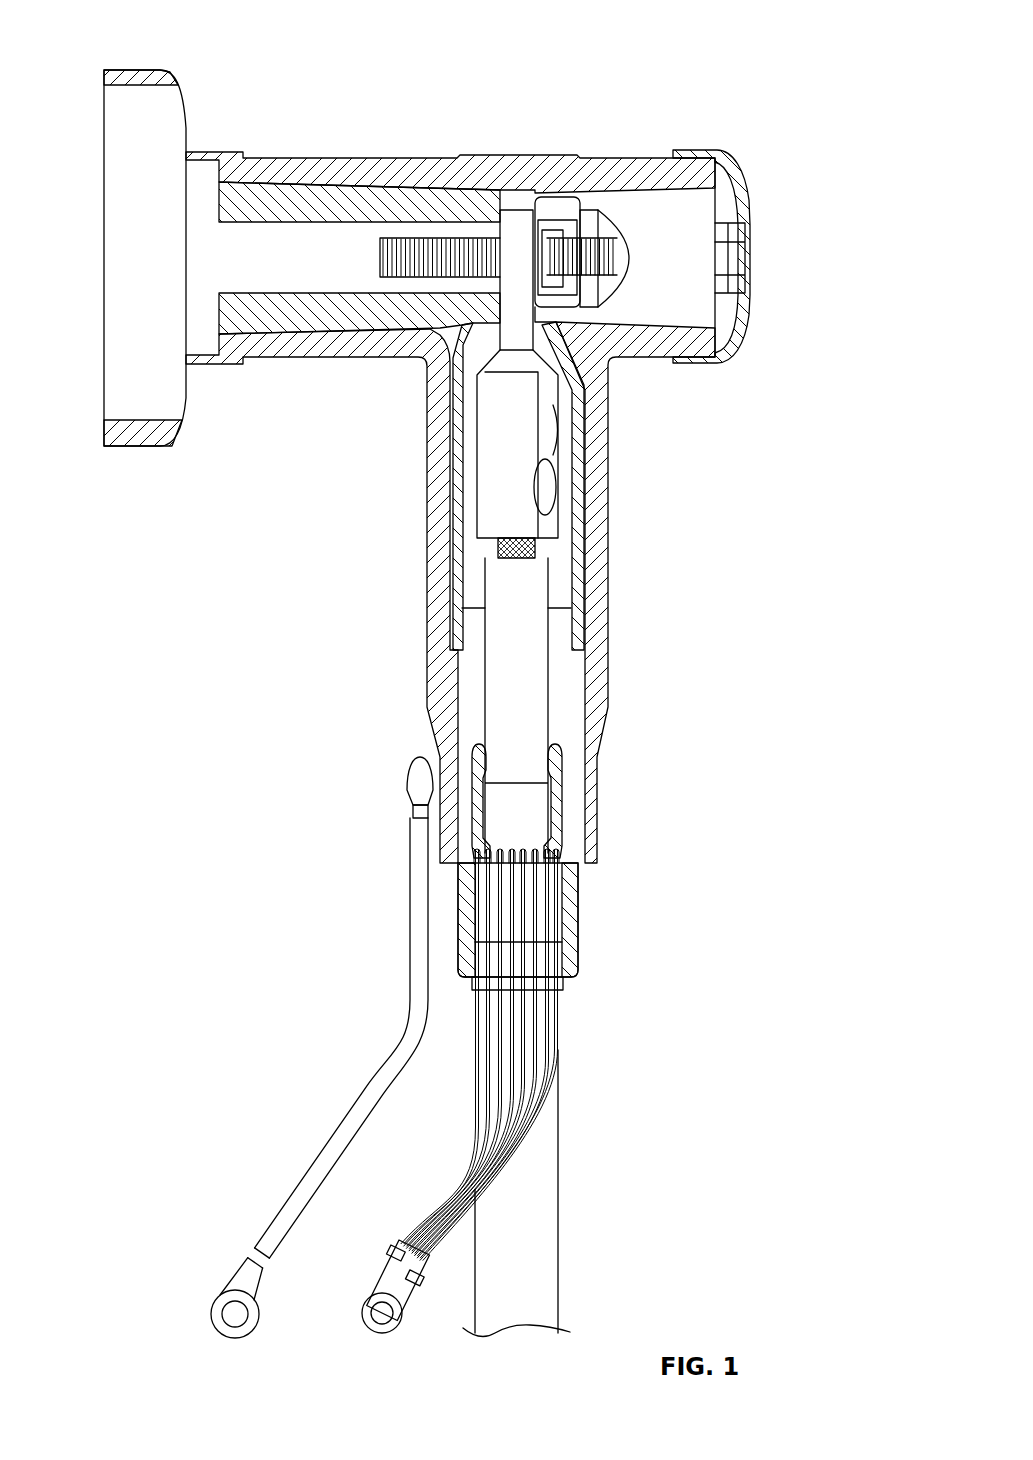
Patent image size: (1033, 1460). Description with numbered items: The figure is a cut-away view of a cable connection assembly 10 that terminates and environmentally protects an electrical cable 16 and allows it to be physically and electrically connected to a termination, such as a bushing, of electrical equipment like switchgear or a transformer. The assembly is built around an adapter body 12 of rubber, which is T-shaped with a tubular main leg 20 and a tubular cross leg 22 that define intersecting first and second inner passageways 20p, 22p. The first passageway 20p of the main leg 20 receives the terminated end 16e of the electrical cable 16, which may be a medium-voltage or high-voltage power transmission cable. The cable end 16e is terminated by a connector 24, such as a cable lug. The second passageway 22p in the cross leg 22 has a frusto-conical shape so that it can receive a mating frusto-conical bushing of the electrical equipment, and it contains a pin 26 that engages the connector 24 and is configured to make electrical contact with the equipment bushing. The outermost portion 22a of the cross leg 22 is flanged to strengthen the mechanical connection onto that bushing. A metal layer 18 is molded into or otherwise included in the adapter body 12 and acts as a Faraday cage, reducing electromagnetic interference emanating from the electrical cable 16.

The cable connection assembly 10 is at (703, 60).
The adapter body 12 is at (376, 150).
The electrical cable 16 is at (558, 1186).
The terminated electrical cable end 16e is at (537, 548).
The metal layer 18 is at (452, 517).
The main leg 20 is at (616, 599).
The first inner passageway 20p is at (475, 552).
The cross leg 22 is at (446, 155).
The outermost portion of the cross leg 22a is at (137, 68).
The second inner passageway 22p is at (286, 250).
The connector 24 is at (505, 430).
The pin 26 is at (588, 217).